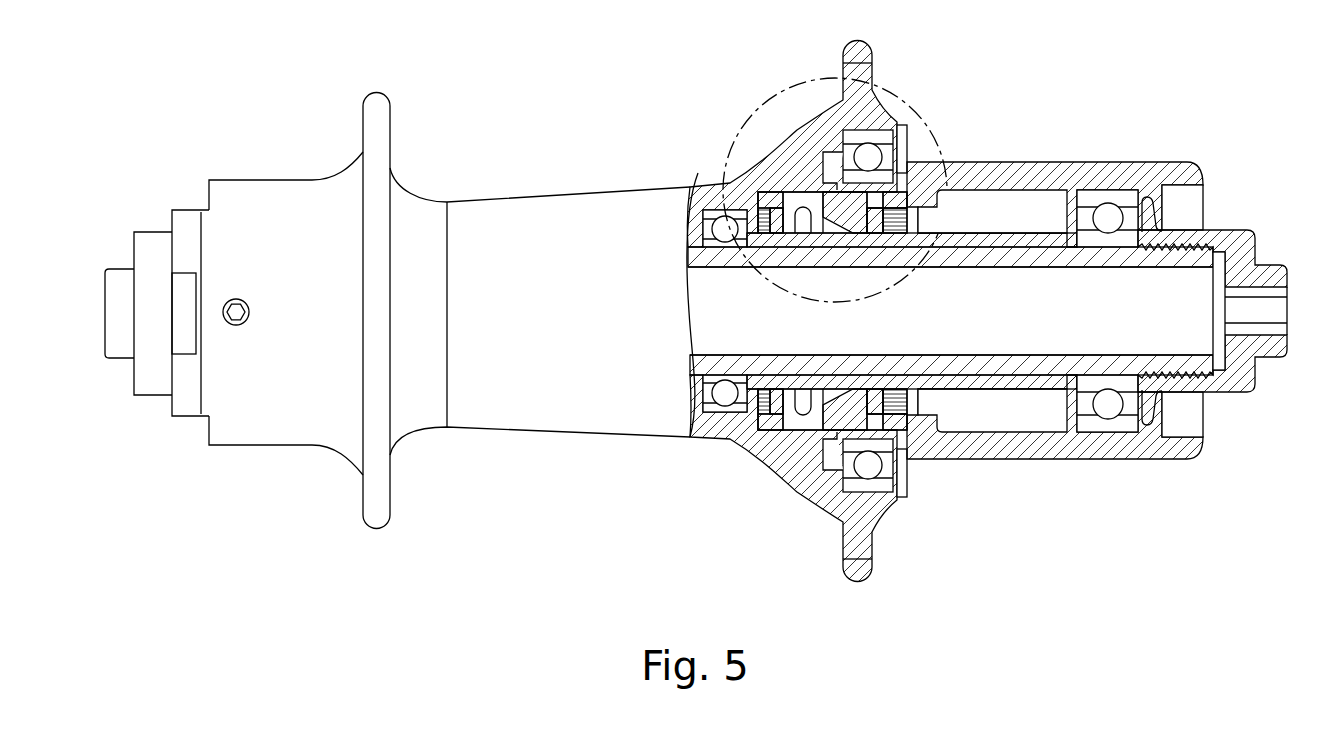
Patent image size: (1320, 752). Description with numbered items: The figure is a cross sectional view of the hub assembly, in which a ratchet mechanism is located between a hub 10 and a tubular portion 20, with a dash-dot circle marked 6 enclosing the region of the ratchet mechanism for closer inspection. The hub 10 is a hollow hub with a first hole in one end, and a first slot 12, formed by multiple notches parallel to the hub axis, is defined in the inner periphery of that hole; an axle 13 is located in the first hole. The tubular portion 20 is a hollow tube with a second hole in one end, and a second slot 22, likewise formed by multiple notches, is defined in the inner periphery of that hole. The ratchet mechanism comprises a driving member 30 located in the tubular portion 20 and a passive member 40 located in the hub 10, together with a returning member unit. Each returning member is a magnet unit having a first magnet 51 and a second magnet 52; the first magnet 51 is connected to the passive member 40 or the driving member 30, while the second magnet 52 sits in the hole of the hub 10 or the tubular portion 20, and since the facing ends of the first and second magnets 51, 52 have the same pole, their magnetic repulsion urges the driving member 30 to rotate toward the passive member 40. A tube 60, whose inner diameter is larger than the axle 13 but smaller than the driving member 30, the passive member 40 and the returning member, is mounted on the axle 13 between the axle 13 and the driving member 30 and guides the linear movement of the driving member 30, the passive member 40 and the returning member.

The hub 10 is at (544, 475).
The first slot 12 is at (722, 192).
The axle 13 is at (1030, 368).
The tubular portion 20 is at (1146, 524).
The second slot 22 is at (882, 187).
The driving member 30 is at (897, 207).
The passive member 40 is at (796, 180).
The first magnet 51 is at (777, 413).
The second magnet 52 is at (753, 413).
The tube 60 is at (1027, 243).
The detail region of FIG. 6 is at (835, 190).